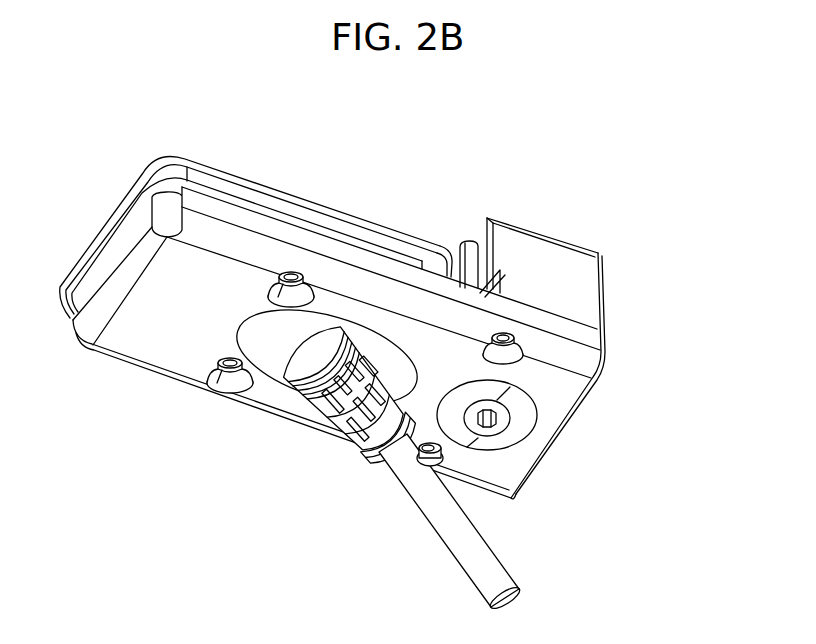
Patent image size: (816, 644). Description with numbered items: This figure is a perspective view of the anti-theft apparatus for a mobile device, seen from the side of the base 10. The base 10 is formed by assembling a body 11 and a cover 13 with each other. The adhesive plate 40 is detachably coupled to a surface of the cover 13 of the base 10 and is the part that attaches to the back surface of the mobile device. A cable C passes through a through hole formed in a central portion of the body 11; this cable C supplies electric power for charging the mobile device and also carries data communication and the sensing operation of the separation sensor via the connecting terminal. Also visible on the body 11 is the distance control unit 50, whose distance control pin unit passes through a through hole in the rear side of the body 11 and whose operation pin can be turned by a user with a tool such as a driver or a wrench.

The adhesive plate 40 is at (338, 227).
The base 10 is at (408, 358).
The body 11 is at (570, 357).
The cover 13 is at (578, 287).
The distance control unit 50 is at (518, 420).
The cable C is at (473, 547).